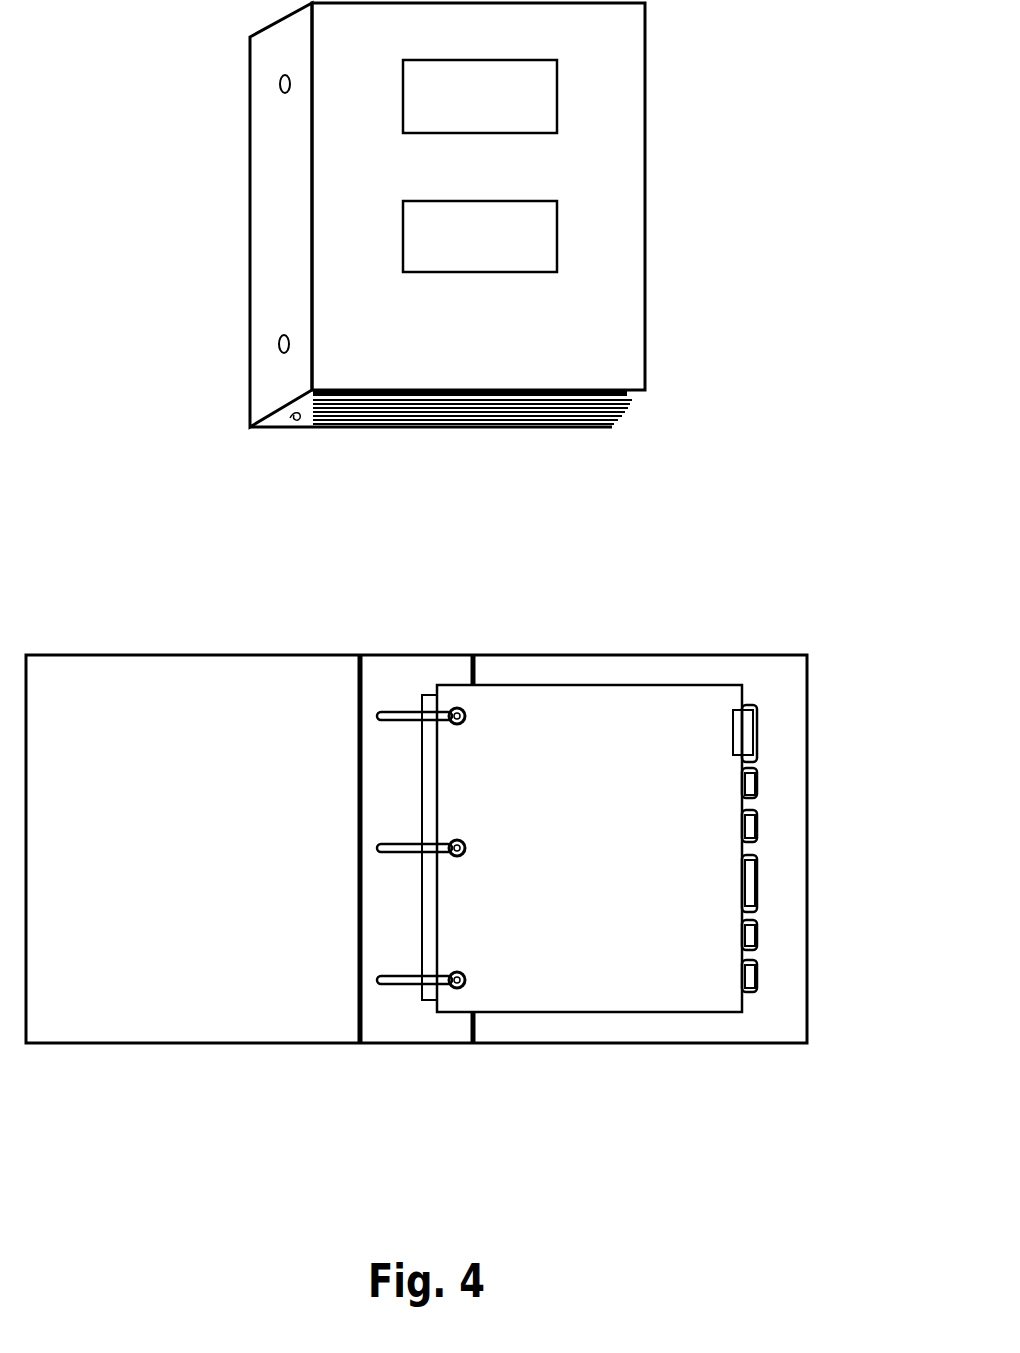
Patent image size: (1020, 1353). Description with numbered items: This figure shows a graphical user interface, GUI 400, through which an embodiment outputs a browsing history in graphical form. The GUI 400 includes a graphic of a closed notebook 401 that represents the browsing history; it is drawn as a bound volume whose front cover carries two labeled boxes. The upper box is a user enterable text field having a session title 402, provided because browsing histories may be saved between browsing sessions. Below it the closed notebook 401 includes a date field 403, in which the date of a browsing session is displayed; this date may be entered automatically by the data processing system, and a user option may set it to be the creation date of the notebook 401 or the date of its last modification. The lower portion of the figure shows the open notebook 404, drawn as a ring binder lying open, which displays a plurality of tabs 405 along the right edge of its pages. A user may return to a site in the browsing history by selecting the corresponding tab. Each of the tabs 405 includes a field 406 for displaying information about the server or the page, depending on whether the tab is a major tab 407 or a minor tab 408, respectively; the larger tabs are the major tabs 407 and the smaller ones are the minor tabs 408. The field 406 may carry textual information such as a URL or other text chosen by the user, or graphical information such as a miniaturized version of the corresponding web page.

The GUI 400 is at (842, 1126).
The closed notebook 401 is at (250, 372).
The session title text field 402 is at (557, 100).
The date field 403 is at (557, 229).
The open notebook 404 is at (357, 1045).
The tabs 405 is at (555, 995).
The field 406 is at (757, 715).
The major tab 407 is at (757, 728).
The minor tab 408 is at (757, 785).